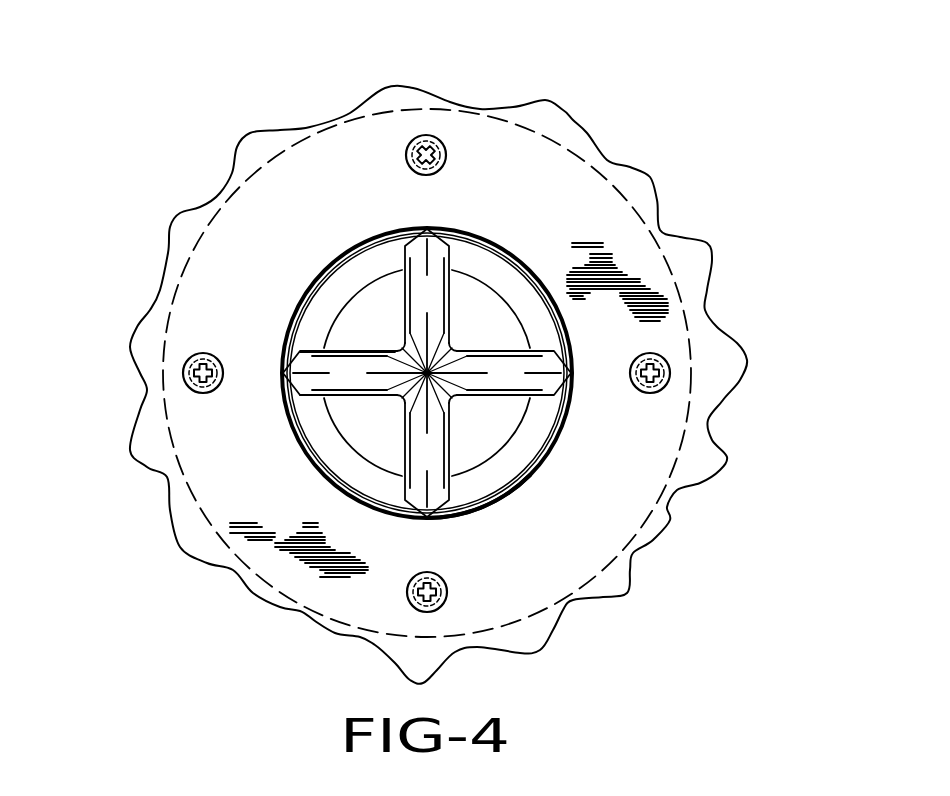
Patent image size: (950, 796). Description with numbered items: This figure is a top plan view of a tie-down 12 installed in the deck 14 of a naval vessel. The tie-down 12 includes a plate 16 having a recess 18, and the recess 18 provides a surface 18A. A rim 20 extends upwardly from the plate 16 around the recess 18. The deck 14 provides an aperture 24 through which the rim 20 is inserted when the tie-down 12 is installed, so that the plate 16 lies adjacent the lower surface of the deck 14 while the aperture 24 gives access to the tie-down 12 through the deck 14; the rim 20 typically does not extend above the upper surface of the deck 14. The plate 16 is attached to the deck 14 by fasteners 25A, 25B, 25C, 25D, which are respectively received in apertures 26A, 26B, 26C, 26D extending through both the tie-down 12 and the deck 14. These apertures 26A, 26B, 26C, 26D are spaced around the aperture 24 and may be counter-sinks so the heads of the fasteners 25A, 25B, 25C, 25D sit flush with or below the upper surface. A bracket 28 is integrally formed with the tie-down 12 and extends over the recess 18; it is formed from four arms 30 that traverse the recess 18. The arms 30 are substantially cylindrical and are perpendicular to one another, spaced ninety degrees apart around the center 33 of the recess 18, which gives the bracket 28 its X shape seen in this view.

The tie-down 12 is at (377, 245).
The deck 14 is at (237, 243).
The plate 16 is at (673, 277).
The recess 18 is at (372, 427).
The surface 18A is at (470, 442).
The rim 20 is at (527, 467).
The aperture 24 is at (487, 507).
The fastener 25A is at (422, 139).
The fastener 25B is at (189, 358).
The fastener 25C is at (442, 610).
The fastener 25D is at (663, 357).
The aperture 26A is at (437, 133).
The aperture 26B is at (188, 388).
The aperture 26C is at (410, 614).
The aperture 26D is at (664, 385).
The bracket 28 is at (370, 350).
The arms 30 is at (443, 305).
The center 33 is at (450, 367).